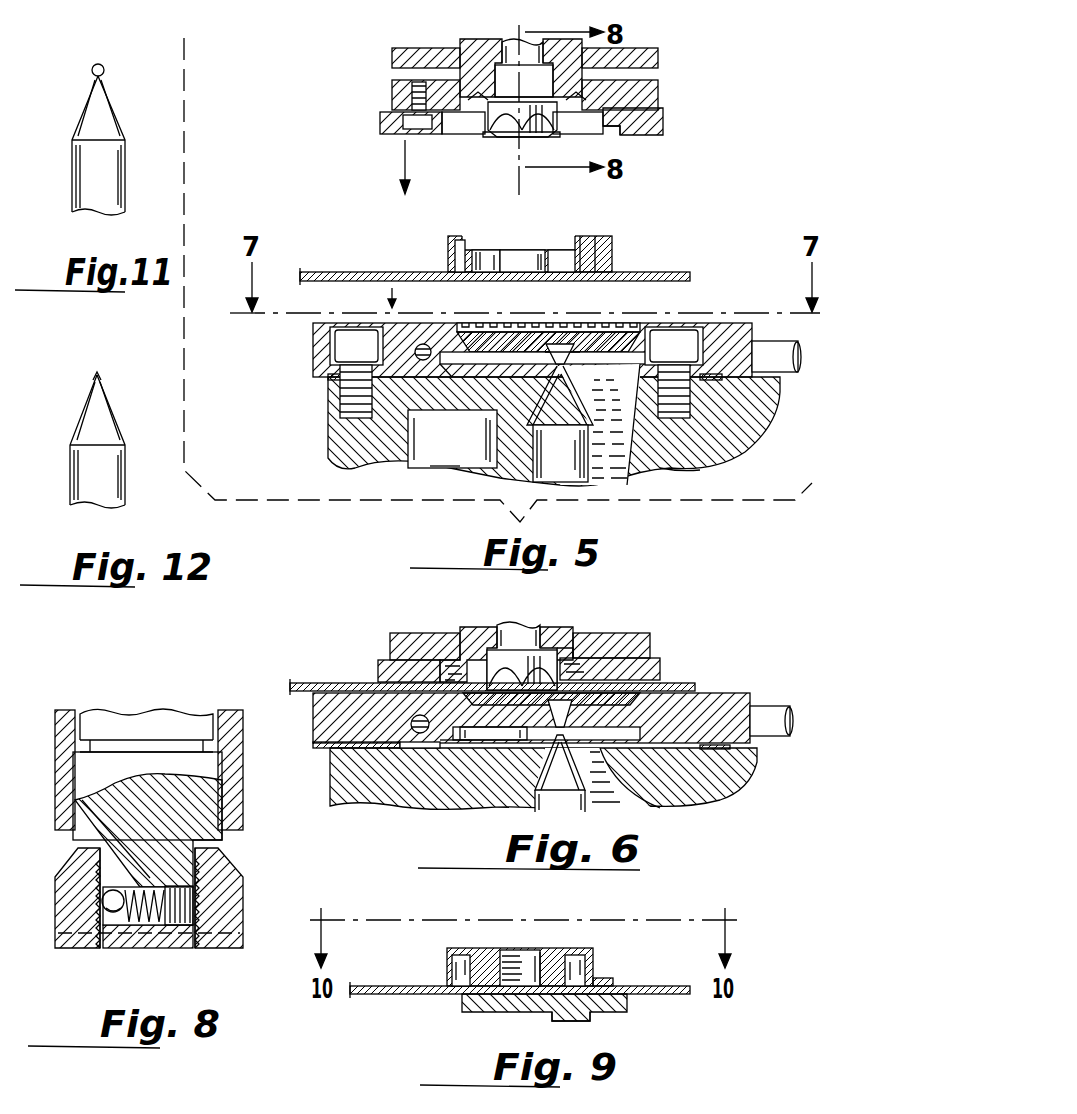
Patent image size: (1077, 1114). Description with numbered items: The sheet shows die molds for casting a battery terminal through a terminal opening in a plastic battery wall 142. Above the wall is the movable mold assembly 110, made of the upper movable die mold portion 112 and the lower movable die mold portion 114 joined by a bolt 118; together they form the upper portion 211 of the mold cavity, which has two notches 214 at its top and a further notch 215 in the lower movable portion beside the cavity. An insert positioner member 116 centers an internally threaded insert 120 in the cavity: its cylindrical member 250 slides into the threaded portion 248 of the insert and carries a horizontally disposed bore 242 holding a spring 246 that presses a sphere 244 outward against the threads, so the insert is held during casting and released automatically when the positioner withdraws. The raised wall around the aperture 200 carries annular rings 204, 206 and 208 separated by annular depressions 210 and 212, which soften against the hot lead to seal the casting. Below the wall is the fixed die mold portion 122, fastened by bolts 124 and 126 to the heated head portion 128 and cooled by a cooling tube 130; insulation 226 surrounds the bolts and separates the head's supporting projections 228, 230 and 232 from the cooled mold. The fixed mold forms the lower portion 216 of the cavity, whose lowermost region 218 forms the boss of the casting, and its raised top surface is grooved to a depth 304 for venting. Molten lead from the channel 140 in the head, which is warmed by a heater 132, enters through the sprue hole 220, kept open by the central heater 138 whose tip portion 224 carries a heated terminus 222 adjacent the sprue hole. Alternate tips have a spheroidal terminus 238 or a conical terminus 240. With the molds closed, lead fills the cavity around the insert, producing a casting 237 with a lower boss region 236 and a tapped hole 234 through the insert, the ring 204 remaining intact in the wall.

In FIG. 5, the movable mold assembly 110 is at (574, 107).
In FIG. 5, the upper movable die mold portion 112 is at (640, 58).
In FIG. 6, the upper movable die mold portion 112 is at (653, 648).
In FIG. 5, the lower movable die mold portion 114 is at (662, 118).
In FIG. 6, the lower movable die mold portion 114 is at (658, 670).
In FIG. 5, the insert positioner member 116 is at (516, 42).
In FIG. 6, the insert positioner member 116 is at (512, 630).
In FIG. 8, the insert positioner member 116 is at (138, 727).
In FIG. 5, the bolt 118 is at (410, 100).
In FIG. 5, the internally threaded insert 120 is at (548, 118).
In FIG. 6, the internally threaded insert 120 is at (507, 665).
In FIG. 8, the internally threaded insert 120 is at (70, 917).
In FIG. 9, the internally threaded insert 120 is at (502, 960).
In FIG. 5, the fixed die mold portion 122 is at (590, 333).
In FIG. 6, the fixed die mold portion 122 is at (598, 659).
In FIG. 5, the bolt 124 is at (345, 346).
In FIG. 5, the bolt 126 is at (690, 342).
In FIG. 5, the heated head portion 128 is at (529, 451).
In FIG. 6, the heated head portion 128 is at (593, 788).
In FIG. 5, the cooling tube 130 is at (790, 356).
In FIG. 6, the cooling tube 130 is at (780, 718).
In FIG. 5, the heater 132 is at (440, 468).
In FIG. 5, the central heater 138 is at (570, 465).
In FIG. 5, the channel portion 140 is at (677, 447).
In FIG. 5, the battery wall 142 is at (342, 272).
In FIG. 6, the battery wall 142 is at (693, 687).
In FIG. 9, the battery wall 142 is at (378, 986).
In FIG. 5, the aperture 200 is at (522, 256).
In FIG. 5, the annular ring 204 is at (530, 233).
In FIG. 9, the annular ring 204 is at (558, 937).
In FIG. 5, the annular ring 206 is at (460, 240).
In FIG. 5, the annular ring 208 is at (474, 250).
In FIG. 5, the annular depression 210 is at (566, 250).
In FIG. 5, the upper portion of the mold cavity 211 is at (466, 122).
In FIG. 6, the upper portion of the mold cavity 211 is at (577, 628).
In FIG. 5, the annular depression 212 is at (596, 250).
In FIG. 5, the notches 214 is at (648, 90).
In FIG. 5, the notch 215 is at (614, 134).
In FIG. 5, the lower portion of the mold cavity 216 is at (537, 338).
In FIG. 6, the lower portion of the mold cavity 216 is at (627, 650).
In FIG. 5, the lowermost region 218 is at (595, 350).
In FIG. 5, the sprue hole 220 is at (574, 352).
In FIG. 6, the sprue hole 220 is at (613, 697).
In FIG. 5, the terminus 222 is at (548, 350).
In FIG. 5, the tip portion 224 is at (592, 410).
In FIG. 6, the tip portion 224 is at (560, 773).
In FIG. 11, the tip portion 224 is at (97, 128).
In FIG. 12, the tip portion 224 is at (98, 432).
In FIG. 5, the insulation 226 is at (333, 382).
In FIG. 6, the insulation 226 is at (318, 748).
In FIG. 5, the projection 228 is at (452, 368).
In FIG. 6, the projection 228 is at (440, 776).
In FIG. 5, the projection 230 is at (490, 418).
In FIG. 6, the projection 230 is at (525, 742).
In FIG. 5, the projection 232 is at (630, 420).
In FIG. 6, the projection 232 is at (640, 810).
In FIG. 9, the tapped hole 234 is at (517, 968).
In FIG. 9, the lower boss region 236 is at (572, 1015).
In FIG. 9, the casting 237 is at (500, 997).
In FIG. 11, the spheroidal terminus 238 is at (105, 68).
In FIG. 12, the conical terminus 240 is at (97, 375).
In FIG. 8, the bore 242 is at (147, 923).
In FIG. 8, the sphere 244 is at (112, 900).
In FIG. 8, the spring 246 is at (153, 890).
In FIG. 8, the threaded portion 248 is at (117, 922).
In FIG. 8, the cylindrical member 250 is at (143, 880).
In FIG. 5, the depth of the grooves 304 is at (566, 330).